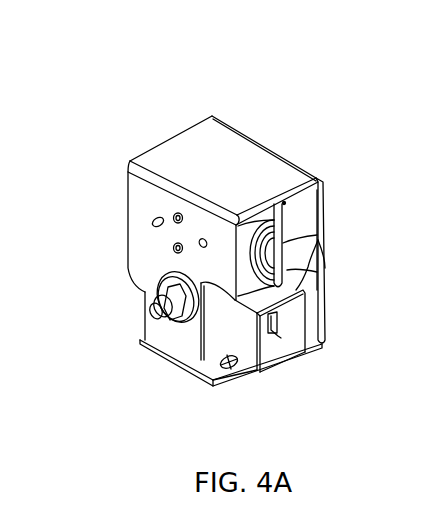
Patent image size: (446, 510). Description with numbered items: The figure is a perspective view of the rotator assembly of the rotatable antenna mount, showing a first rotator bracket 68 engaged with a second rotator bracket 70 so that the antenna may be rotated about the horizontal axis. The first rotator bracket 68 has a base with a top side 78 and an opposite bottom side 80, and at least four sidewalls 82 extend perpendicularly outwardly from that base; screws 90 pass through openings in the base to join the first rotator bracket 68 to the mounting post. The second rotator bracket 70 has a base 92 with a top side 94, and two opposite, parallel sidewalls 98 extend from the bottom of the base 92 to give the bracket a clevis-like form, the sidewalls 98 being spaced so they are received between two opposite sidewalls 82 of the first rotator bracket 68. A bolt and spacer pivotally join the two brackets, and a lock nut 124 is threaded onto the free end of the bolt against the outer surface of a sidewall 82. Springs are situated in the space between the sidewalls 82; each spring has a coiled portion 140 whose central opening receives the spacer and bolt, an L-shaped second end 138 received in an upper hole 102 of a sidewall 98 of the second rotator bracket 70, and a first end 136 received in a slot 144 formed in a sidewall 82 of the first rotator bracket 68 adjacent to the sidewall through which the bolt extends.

The second rotator bracket 70 is at (97, 97).
The base 92 is at (201, 127).
The top side 94 is at (228, 137).
The sidewalls 98 is at (128, 186).
The first rotator bracket 68 is at (327, 290).
The sidewalls 82 is at (327, 273).
The coiled portion 140 is at (300, 222).
The upper hole 102 is at (207, 238).
The second end 138 is at (151, 218).
The lock nut 124 is at (150, 315).
The first end 136 is at (173, 345).
The bottom side 80 is at (235, 385).
The top side 78 is at (283, 348).
The screws 90 is at (236, 372).
The slots 144 is at (280, 324).